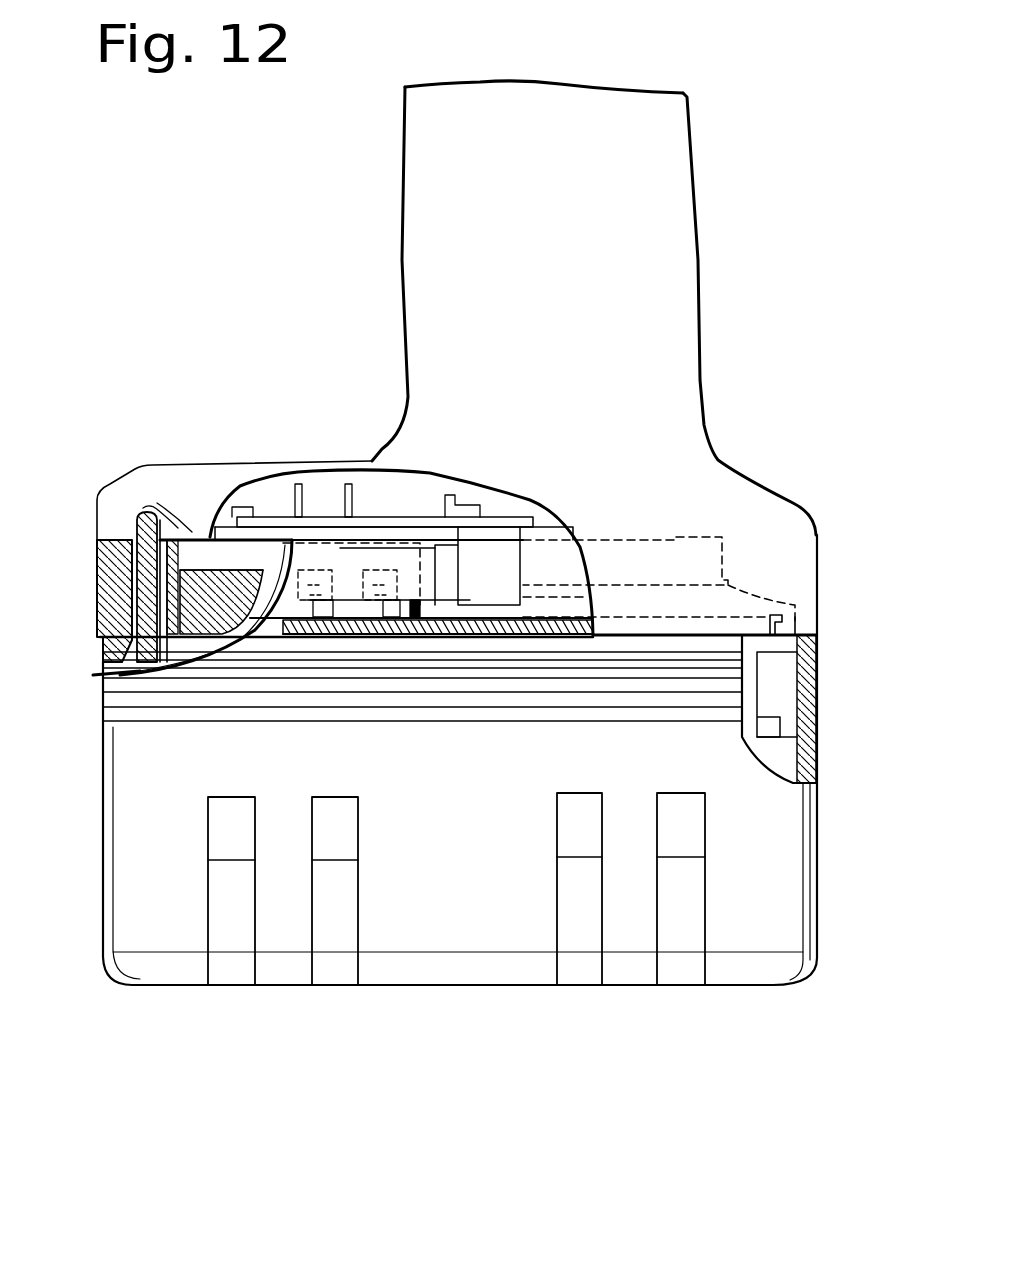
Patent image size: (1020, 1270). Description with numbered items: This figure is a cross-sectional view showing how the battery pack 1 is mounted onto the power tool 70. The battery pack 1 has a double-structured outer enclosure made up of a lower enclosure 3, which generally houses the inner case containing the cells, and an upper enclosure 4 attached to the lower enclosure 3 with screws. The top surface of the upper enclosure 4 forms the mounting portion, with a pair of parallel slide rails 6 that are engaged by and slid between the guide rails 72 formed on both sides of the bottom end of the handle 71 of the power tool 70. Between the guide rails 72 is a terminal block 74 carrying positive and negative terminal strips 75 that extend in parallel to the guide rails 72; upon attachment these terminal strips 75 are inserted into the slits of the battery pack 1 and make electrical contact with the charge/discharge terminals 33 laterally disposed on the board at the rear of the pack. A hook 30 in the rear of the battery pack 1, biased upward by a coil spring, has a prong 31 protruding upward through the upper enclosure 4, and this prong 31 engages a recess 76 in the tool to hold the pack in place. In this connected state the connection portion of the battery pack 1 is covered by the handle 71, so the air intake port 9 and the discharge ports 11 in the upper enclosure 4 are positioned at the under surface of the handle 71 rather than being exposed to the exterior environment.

The battery pack 1 is at (502, 1000).
The lower enclosure 3 is at (780, 884).
The upper enclosure 4 is at (817, 687).
The slide rails 6 is at (678, 537).
The intake port 9 is at (200, 538).
The discharge ports 11 is at (793, 640).
The hook 30 is at (97, 603).
The prong 31 is at (140, 503).
The charge/discharge terminals 33 is at (335, 607).
The power tool 70 is at (708, 141).
The handle 71 is at (680, 291).
The guide rails 72 is at (715, 577).
The terminal block 74 is at (388, 532).
The terminal strips 75 is at (338, 565).
The recess 76 is at (147, 502).